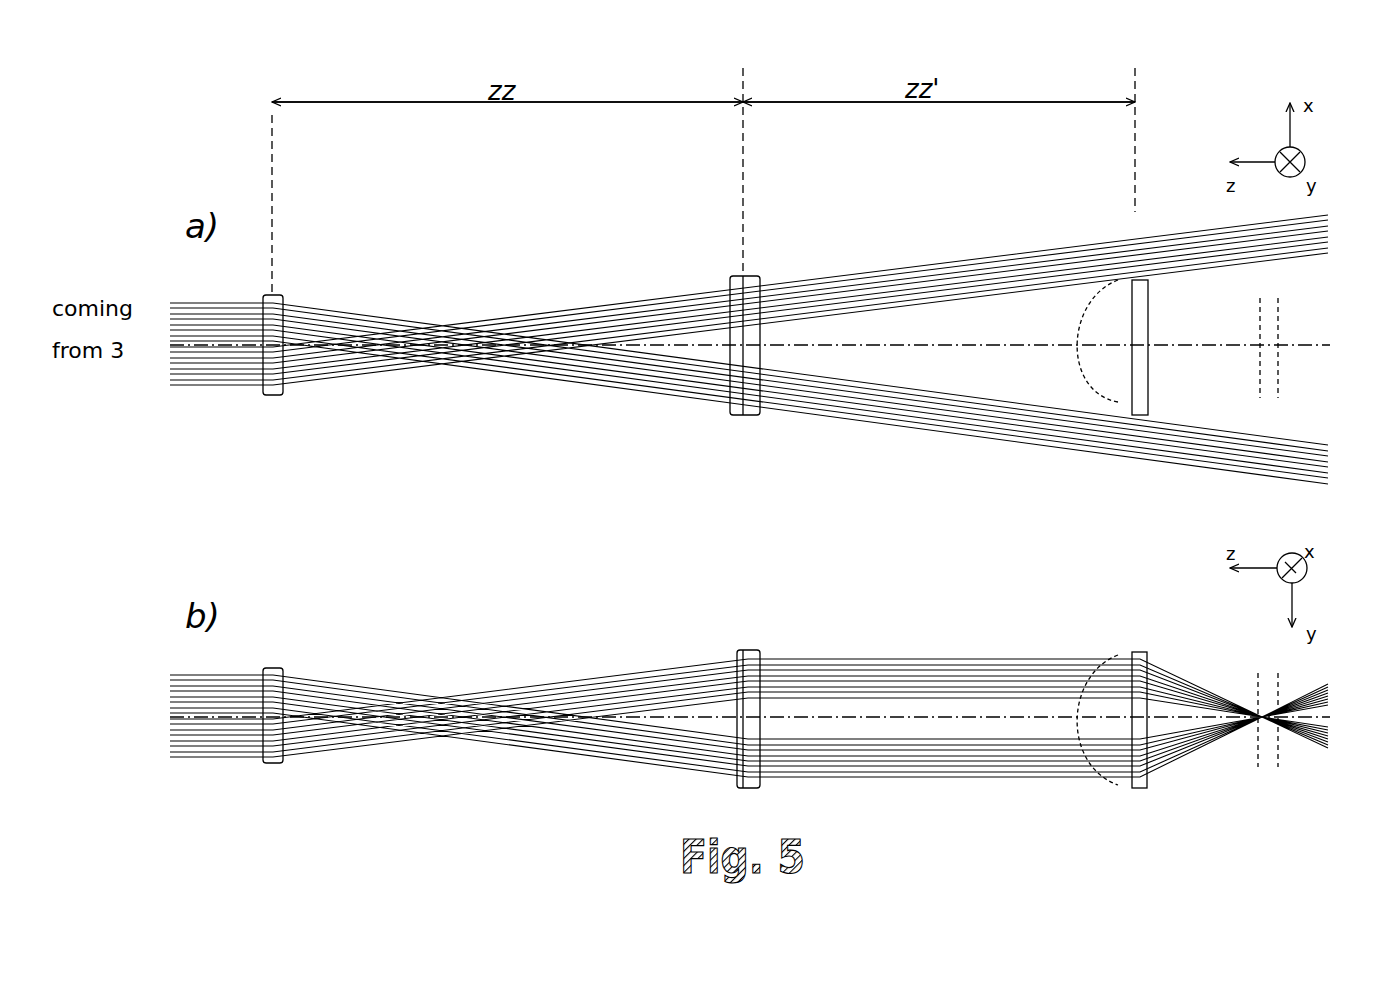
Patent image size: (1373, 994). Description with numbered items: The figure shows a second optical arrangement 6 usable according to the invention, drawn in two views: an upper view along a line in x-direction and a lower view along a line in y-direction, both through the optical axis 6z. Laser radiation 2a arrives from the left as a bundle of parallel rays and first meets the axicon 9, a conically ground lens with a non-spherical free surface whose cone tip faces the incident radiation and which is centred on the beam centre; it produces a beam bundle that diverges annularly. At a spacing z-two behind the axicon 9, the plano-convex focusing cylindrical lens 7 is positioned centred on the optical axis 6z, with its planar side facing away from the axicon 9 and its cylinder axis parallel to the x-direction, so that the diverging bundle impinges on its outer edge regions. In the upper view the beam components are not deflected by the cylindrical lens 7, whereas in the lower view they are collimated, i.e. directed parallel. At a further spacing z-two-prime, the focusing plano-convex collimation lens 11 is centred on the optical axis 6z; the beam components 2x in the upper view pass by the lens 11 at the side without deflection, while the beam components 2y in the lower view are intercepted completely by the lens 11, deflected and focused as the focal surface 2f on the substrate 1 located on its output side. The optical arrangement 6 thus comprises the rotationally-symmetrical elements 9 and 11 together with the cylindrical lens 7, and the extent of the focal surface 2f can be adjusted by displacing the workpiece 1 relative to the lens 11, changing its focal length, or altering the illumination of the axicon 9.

The substrate 1 is at (1268, 312).
The laser radiation beam path 2a is at (210, 317).
The beam components in x-direction 2x is at (1164, 349).
The beam components in y-direction 2y is at (1107, 663).
The focal surface 2f is at (1250, 730).
The optical arrangement 6 is at (599, 566).
The optical axis 6z is at (995, 347).
The cylindrical lens 7 is at (747, 418).
The axicon 9 is at (270, 398).
The collimation lens 11 is at (1117, 400).